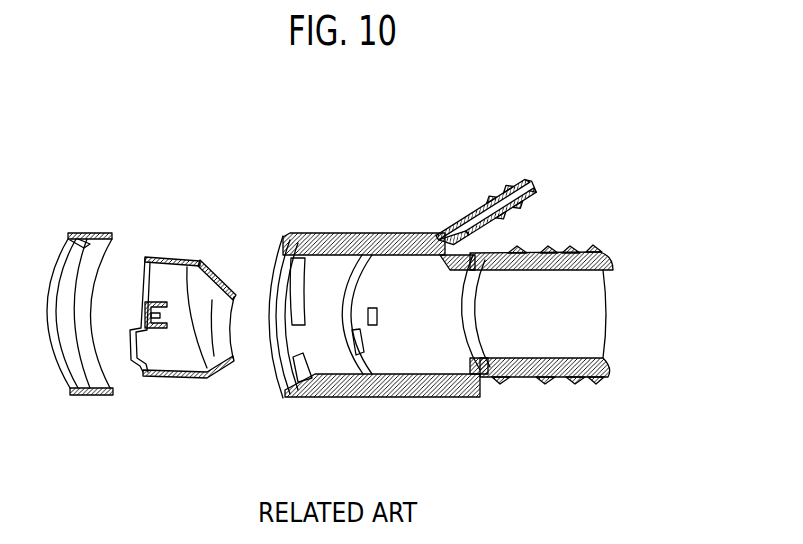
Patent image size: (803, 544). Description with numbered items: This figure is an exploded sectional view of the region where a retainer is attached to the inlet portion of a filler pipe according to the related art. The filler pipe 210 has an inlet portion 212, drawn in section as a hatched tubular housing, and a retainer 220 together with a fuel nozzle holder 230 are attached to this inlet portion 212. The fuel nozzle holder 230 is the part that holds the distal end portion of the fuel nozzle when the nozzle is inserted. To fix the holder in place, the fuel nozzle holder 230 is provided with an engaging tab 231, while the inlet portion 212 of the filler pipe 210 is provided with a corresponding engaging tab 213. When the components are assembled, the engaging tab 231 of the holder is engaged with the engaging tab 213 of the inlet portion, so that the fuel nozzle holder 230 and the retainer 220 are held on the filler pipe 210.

The filler pipe 210 is at (441, 311).
The inlet portion 212 is at (443, 392).
The engaging tab 213 is at (375, 325).
The retainer 220 is at (91, 233).
The fuel nozzle holder 230 is at (183, 311).
The engaging tab 231 is at (158, 332).